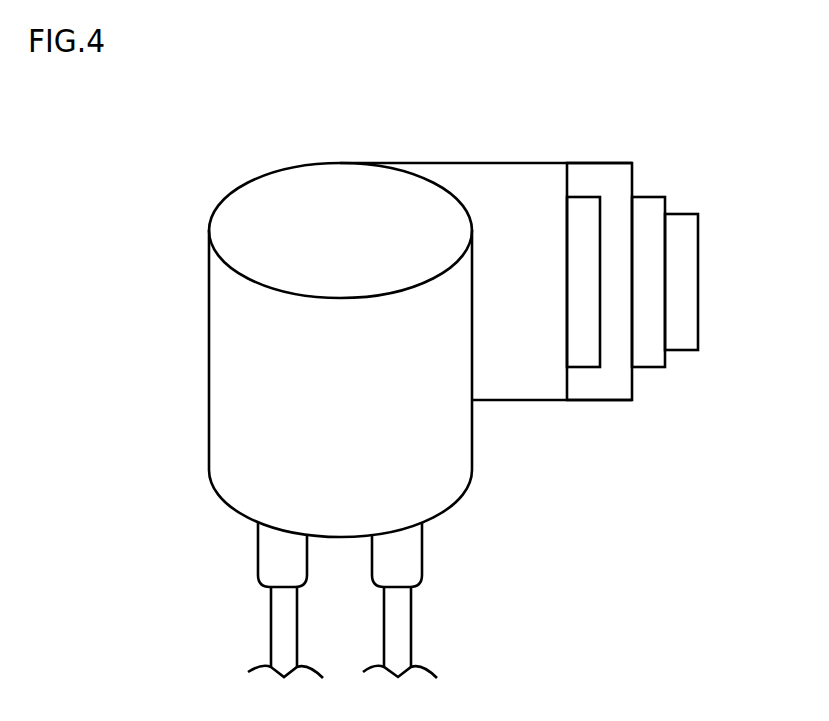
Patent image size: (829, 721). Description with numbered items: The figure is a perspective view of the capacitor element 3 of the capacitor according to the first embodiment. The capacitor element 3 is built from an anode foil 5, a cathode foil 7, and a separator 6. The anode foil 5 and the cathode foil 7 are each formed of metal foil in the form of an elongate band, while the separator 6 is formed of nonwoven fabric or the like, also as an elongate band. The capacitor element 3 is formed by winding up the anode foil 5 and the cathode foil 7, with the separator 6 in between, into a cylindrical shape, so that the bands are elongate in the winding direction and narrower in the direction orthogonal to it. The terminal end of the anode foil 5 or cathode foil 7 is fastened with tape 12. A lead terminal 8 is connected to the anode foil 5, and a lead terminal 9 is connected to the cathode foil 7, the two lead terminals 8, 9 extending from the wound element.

The capacitor element 3 is at (452, 146).
The anode foil 5 is at (587, 345).
The separator 6 is at (539, 377).
The cathode foil 7 is at (646, 352).
The lead terminal 8 is at (272, 565).
The lead terminal 9 is at (408, 568).
The tape 12 is at (673, 243).